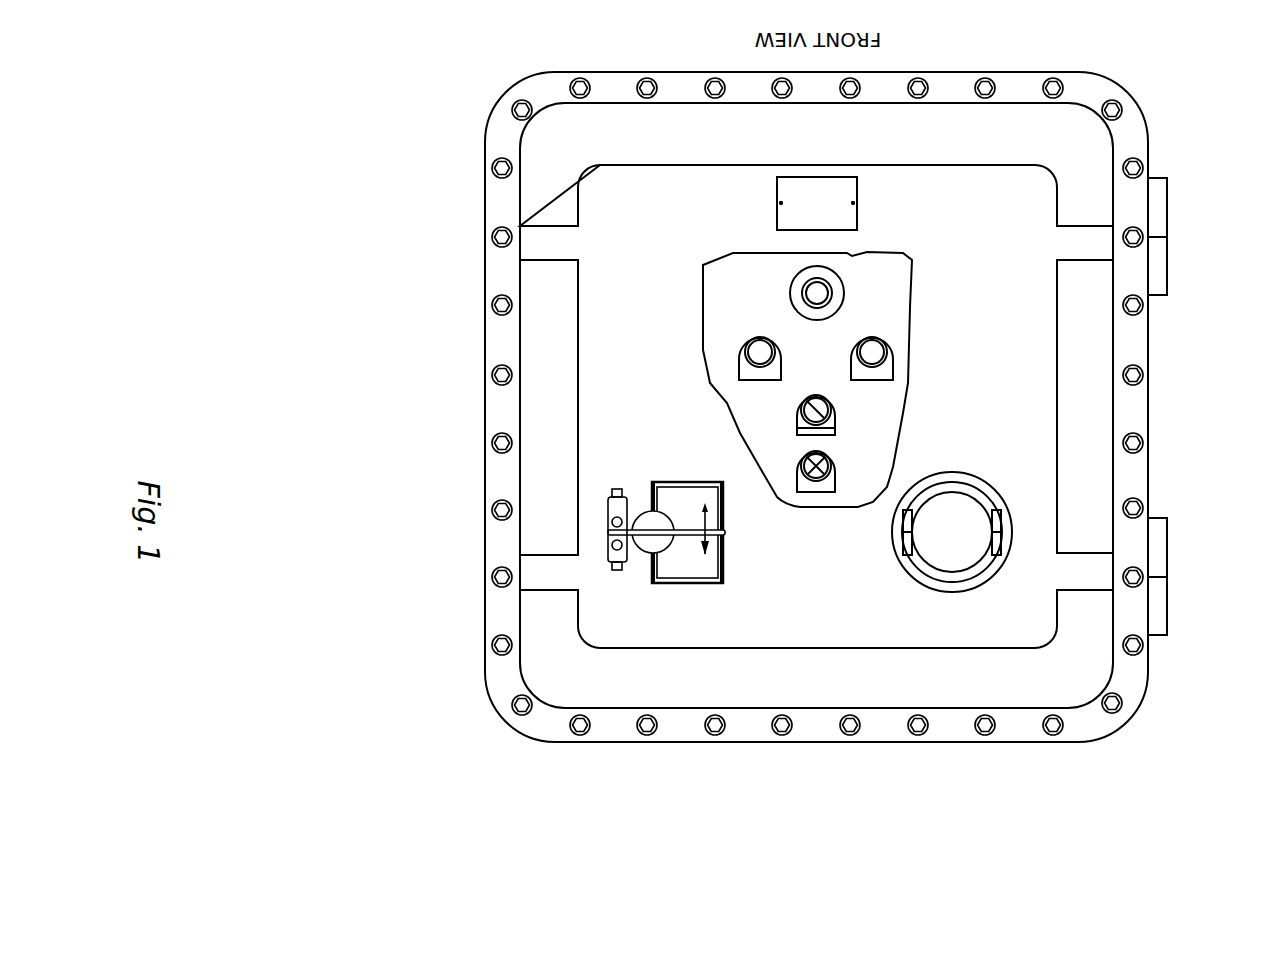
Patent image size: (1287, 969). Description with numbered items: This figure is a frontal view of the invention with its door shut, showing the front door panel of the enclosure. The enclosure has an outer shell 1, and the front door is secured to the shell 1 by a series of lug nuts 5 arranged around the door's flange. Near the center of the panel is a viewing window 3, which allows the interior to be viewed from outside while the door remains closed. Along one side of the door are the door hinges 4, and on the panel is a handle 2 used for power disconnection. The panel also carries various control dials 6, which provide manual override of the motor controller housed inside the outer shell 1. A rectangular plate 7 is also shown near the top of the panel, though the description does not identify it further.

The outer shell 1 is at (538, 737).
The handle 2 is at (651, 586).
The viewing window 3 is at (965, 594).
The door hinges 4 is at (1168, 638).
The lug nuts 5 is at (1146, 452).
The control dials 6 is at (810, 519).
The nameplate 7 is at (856, 204).